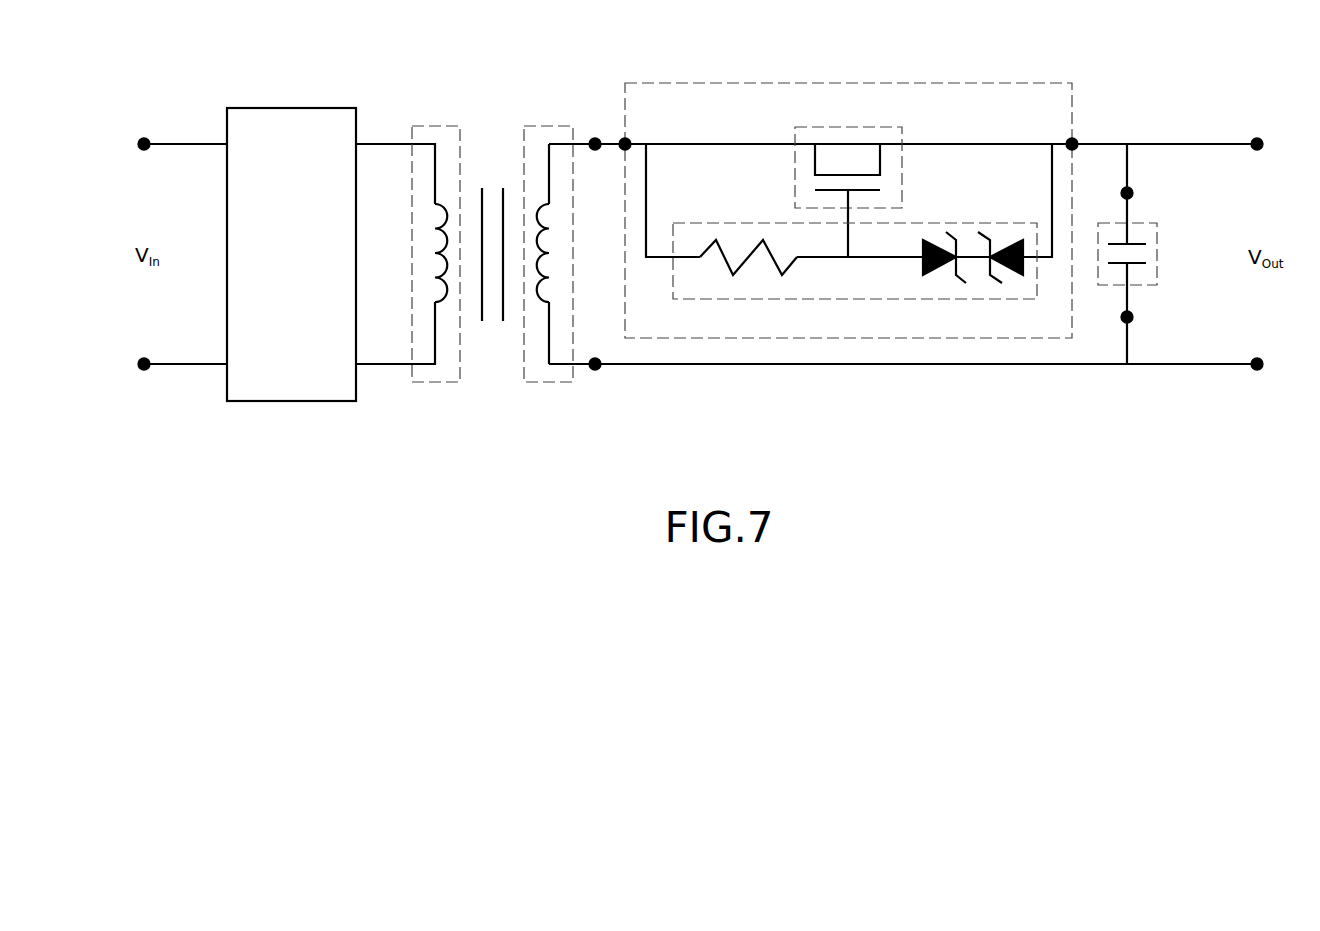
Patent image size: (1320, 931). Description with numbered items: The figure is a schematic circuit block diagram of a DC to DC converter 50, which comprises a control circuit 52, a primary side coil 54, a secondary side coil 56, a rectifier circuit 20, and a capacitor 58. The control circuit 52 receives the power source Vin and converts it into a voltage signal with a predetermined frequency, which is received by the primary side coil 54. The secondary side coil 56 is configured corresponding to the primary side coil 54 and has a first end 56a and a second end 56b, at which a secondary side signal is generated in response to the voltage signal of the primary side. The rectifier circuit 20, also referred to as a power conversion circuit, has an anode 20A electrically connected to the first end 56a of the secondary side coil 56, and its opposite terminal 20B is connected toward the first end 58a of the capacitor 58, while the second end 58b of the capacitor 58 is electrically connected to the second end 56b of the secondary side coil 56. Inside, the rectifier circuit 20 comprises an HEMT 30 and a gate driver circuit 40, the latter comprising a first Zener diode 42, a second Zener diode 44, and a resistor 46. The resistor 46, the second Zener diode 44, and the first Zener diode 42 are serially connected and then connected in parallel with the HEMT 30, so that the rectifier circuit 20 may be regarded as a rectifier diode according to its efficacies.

The DC to DC converter 50 is at (343, 46).
The control circuit 52 is at (306, 267).
The primary side coil 54 is at (435, 384).
The secondary side coil 56 is at (549, 384).
The first end 56a is at (594, 138).
The second end 56b is at (599, 369).
The rectifier circuit 20 is at (963, 83).
The anode 20A is at (627, 140).
The second terminal of protection circuit 20B is at (1078, 138).
The HEMT 30 is at (850, 127).
The gate driver circuit 40 is at (933, 223).
The first Zener diode 42 is at (1017, 277).
The second Zener diode 44 is at (914, 277).
The resistor 46 is at (718, 277).
The capacitor 58 is at (1157, 233).
The first end 58a is at (1134, 191).
The second end 58b is at (1134, 315).